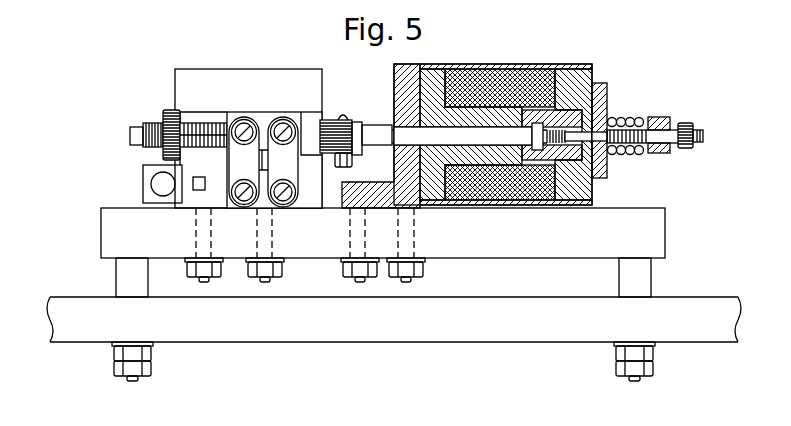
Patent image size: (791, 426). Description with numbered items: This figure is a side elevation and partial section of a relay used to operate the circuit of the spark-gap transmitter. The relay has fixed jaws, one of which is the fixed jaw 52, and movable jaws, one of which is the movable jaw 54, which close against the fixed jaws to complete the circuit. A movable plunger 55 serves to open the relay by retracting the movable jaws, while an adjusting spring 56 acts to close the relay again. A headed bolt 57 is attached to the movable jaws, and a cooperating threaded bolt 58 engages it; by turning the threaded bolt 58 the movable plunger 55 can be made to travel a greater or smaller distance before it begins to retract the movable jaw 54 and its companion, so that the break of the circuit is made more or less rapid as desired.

The fixed jaw 52 is at (273, 118).
The movable jaw 54 is at (327, 116).
The movable plunger 55 is at (584, 115).
The adjusting spring 56 is at (636, 119).
The headed bolt 57 is at (535, 70).
The threaded bolt 58 is at (701, 134).